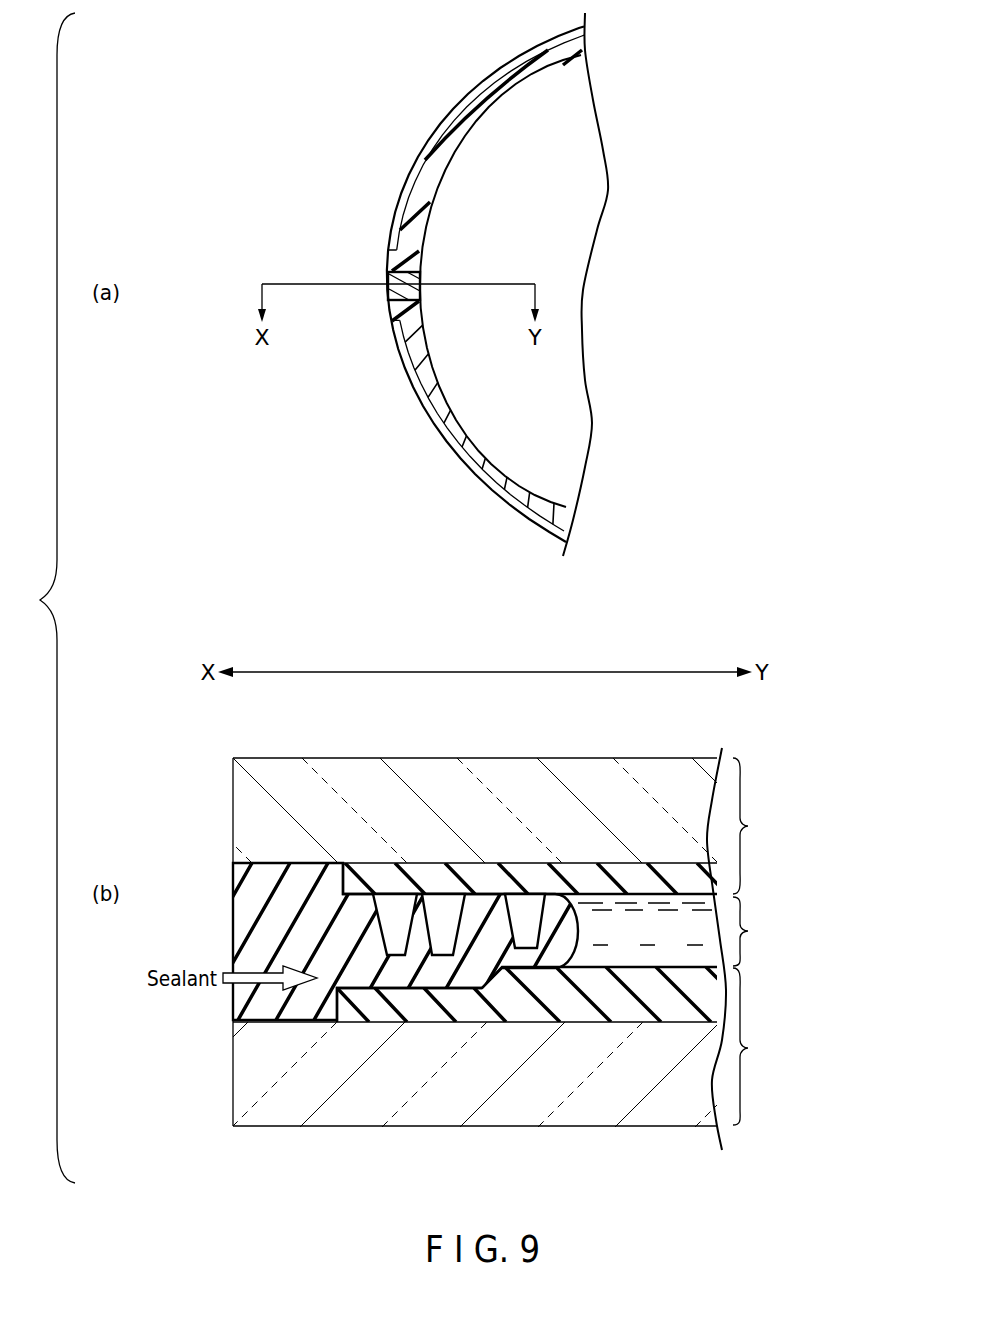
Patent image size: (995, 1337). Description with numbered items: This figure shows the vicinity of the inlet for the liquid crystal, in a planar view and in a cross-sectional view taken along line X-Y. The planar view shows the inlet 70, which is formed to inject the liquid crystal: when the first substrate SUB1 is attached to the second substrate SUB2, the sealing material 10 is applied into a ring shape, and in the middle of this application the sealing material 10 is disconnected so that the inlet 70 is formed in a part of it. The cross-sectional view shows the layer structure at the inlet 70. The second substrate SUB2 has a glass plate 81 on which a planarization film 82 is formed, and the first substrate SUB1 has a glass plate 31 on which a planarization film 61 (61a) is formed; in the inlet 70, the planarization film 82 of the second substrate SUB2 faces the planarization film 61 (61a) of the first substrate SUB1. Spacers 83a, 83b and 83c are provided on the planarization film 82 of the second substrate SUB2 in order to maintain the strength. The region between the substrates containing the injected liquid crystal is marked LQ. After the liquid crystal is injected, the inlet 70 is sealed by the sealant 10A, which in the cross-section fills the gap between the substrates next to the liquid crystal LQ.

The sealing material 10 is at (474, 570).
The first substrate SUB1 is at (477, 97).
The second substrate SUB2 is at (476, 942).
The inlet 70 is at (388, 277).
The sealant 10A is at (243, 920).
The glass plate 81 is at (243, 822).
The glass plate 31 is at (243, 1059).
The planarization film 82 is at (595, 880).
The spacer 83a is at (393, 898).
The spacer 83b is at (437, 898).
The spacer 83c is at (525, 903).
The planarization film 61 is at (549, 1072).
The planarization film 61a is at (409, 1005).
The liquid crystal layer LQ is at (679, 931).